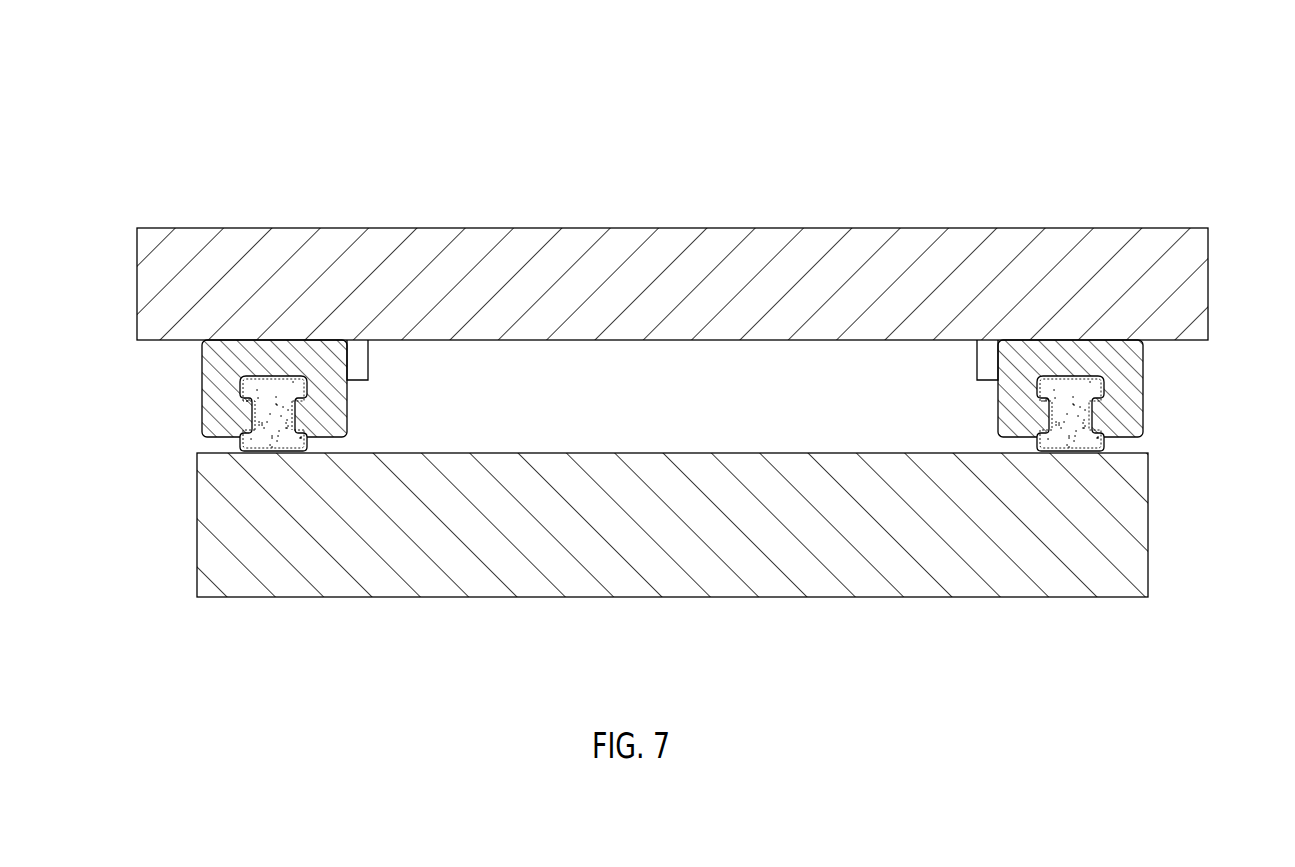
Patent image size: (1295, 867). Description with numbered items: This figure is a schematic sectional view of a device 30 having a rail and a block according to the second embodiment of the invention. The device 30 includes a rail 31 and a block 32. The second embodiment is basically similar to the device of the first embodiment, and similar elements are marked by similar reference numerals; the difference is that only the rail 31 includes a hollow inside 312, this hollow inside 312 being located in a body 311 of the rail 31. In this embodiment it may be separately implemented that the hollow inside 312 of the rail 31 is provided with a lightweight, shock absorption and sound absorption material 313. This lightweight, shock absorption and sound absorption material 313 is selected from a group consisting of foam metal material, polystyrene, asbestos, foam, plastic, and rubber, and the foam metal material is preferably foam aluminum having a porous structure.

The device 30 is at (222, 159).
The rail 31 is at (217, 449).
The body 311 is at (250, 452).
The hollow inside 312 is at (257, 438).
The lightweight, shock absorption and sound absorption material 313 is at (262, 400).
The block 32 is at (1160, 439).